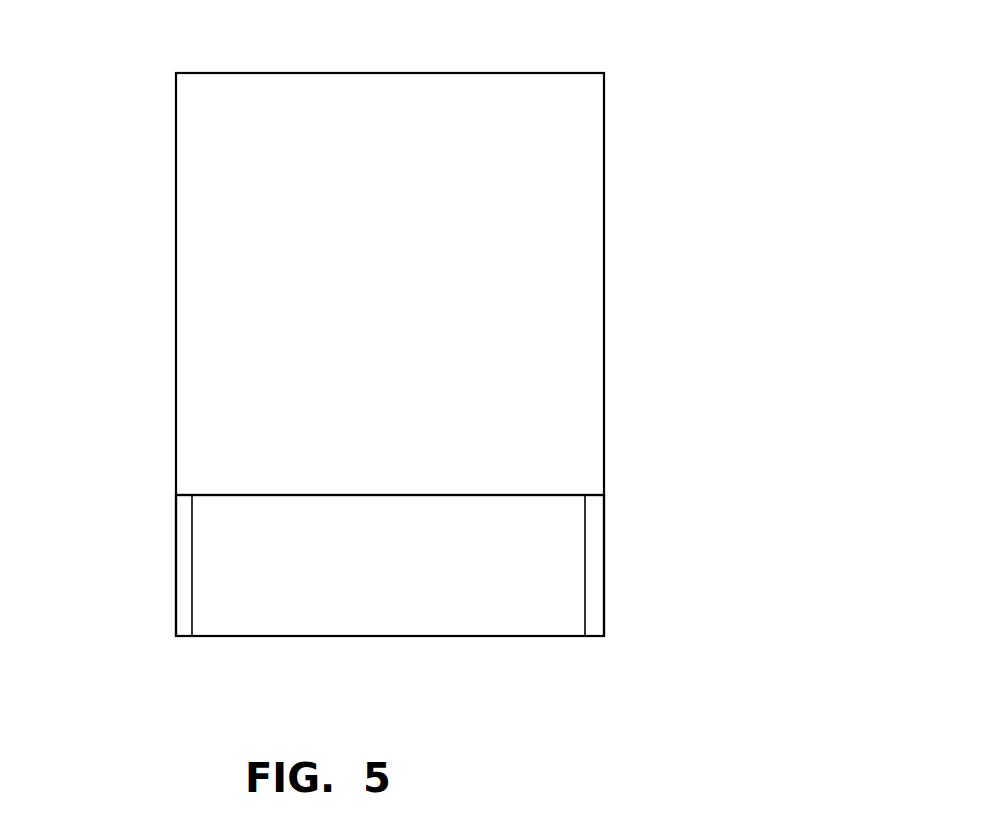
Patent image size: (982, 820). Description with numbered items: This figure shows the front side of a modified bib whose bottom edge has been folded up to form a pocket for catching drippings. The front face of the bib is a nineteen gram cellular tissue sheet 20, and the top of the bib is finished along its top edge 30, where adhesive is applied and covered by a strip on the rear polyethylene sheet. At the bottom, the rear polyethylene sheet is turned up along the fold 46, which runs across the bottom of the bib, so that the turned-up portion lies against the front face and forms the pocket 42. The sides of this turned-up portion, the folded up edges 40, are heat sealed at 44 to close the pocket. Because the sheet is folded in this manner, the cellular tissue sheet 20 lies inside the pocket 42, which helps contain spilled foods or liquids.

The cellular tissue sheet 20 is at (350, 260).
The top edge 30 is at (458, 70).
The folded up edges 40 is at (172, 606).
The pocket 42 is at (330, 583).
The heat seal 44 is at (184, 522).
The fold 46 is at (415, 633).